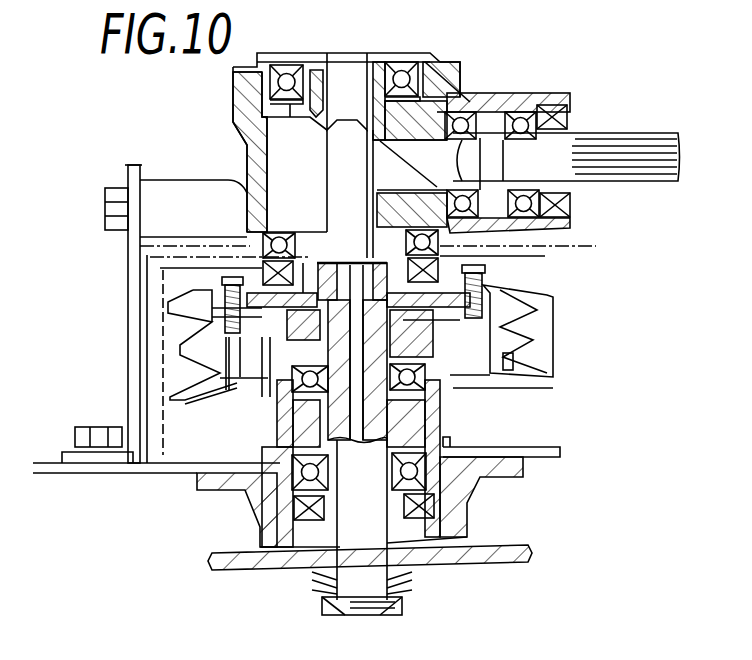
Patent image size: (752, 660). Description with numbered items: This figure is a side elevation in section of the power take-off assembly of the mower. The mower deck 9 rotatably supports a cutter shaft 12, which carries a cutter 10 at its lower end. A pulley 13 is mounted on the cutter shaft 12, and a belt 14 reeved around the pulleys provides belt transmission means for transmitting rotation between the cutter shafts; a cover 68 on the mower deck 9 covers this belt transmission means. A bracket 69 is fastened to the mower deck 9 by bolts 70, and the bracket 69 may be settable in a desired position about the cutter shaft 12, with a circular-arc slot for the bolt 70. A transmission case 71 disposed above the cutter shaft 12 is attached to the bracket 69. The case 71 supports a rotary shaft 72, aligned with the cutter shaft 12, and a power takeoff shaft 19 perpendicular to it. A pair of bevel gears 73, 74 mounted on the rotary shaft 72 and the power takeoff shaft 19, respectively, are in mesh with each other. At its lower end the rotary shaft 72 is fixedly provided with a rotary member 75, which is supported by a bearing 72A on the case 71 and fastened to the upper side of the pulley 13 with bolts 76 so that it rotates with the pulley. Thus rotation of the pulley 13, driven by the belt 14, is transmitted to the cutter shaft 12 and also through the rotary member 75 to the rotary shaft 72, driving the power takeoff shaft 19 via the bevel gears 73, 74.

The deck 9 is at (505, 447).
The cutter 10 is at (512, 566).
The cutter shaft 12 is at (360, 582).
The pulley 13 is at (535, 379).
The belt 14 is at (545, 358).
The power takeoff shaft 19 is at (628, 132).
The cover 68 is at (579, 241).
The bracket 69 is at (130, 272).
The bolt 70 is at (117, 427).
The transmission case 71 is at (245, 109).
The rotary shaft 72 is at (328, 194).
The bearing 72A is at (410, 58).
The bevel gear 73 is at (318, 53).
The bevel gear 74 is at (446, 100).
The rotary member 75 is at (485, 293).
The bolt 76 is at (490, 319).